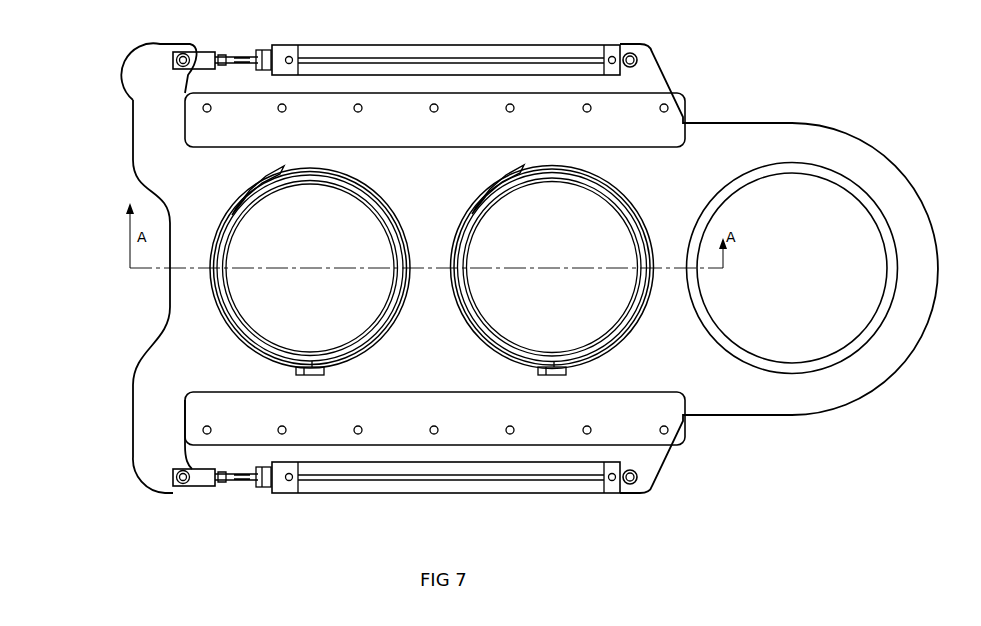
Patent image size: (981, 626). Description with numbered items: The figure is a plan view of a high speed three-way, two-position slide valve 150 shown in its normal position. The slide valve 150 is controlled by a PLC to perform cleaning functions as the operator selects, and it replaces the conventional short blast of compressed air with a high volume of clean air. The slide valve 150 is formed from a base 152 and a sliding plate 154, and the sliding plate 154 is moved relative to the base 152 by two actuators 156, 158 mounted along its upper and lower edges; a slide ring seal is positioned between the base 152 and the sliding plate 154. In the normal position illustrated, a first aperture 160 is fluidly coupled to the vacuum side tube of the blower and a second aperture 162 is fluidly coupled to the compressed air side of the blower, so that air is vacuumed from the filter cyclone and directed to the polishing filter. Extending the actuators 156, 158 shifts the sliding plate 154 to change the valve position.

The slide valve 150 is at (662, 481).
The base 152 is at (665, 124).
The sliding plate 154 is at (167, 435).
The actuator 156 is at (200, 61).
The actuator 158 is at (197, 480).
The first aperture 160 is at (617, 342).
The second aperture 162 is at (223, 323).